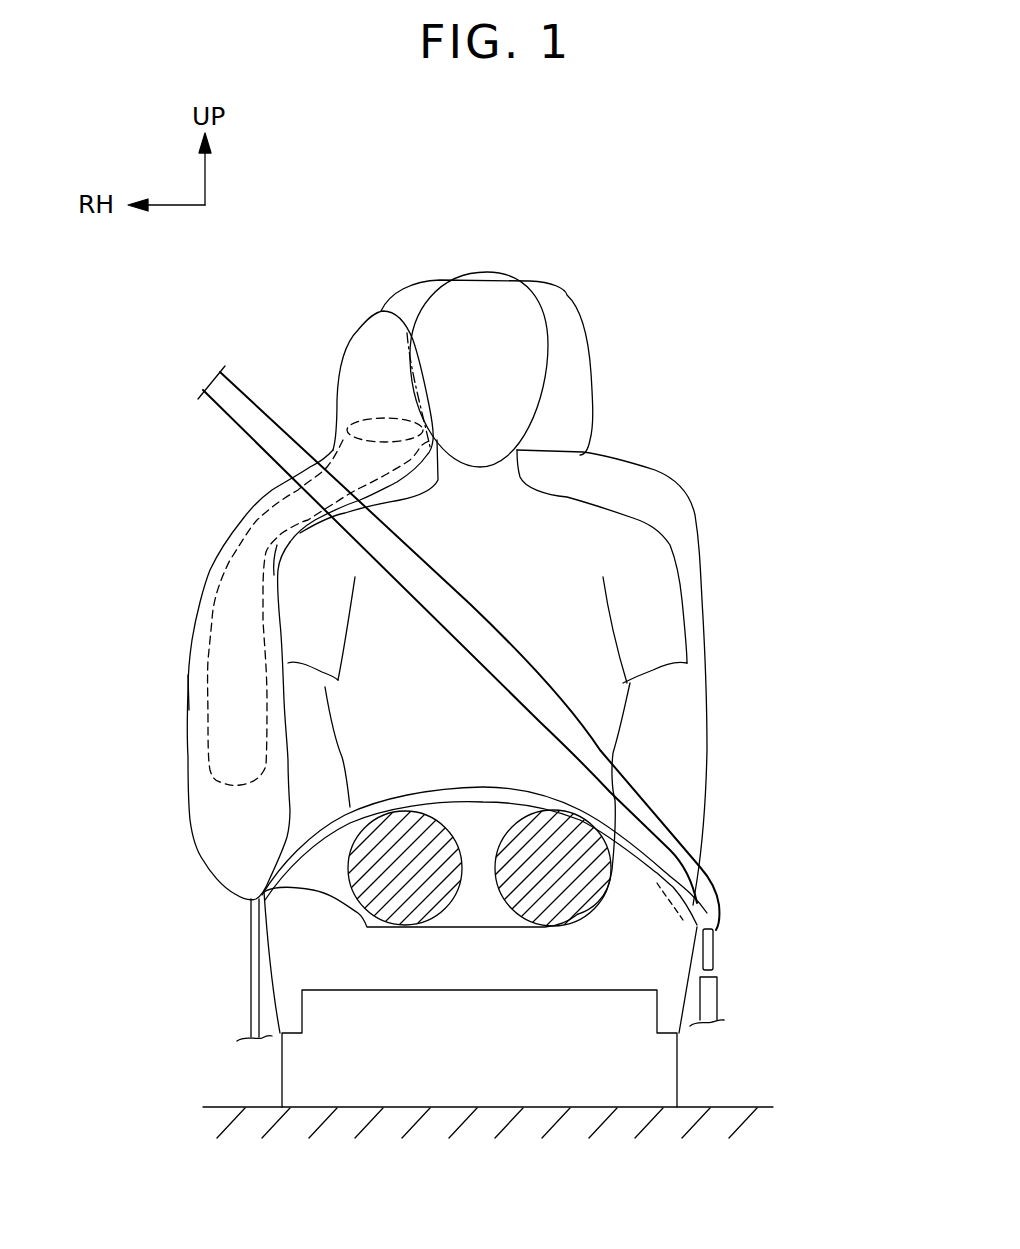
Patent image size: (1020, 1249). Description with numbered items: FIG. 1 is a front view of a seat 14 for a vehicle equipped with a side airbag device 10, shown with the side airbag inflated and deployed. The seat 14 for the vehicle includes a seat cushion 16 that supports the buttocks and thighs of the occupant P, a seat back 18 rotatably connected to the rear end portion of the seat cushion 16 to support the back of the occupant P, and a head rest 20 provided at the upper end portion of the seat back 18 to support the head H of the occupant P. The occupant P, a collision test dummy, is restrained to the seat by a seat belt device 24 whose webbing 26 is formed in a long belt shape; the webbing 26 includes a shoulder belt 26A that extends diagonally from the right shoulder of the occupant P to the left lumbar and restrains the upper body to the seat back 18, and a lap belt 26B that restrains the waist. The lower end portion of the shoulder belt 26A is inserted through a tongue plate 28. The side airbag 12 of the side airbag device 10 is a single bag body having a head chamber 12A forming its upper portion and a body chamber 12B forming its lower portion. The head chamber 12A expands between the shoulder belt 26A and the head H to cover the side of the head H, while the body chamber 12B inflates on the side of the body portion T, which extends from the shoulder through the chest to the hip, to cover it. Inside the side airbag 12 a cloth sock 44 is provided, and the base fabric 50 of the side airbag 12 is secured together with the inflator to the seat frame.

The side airbag device 10 is at (192, 525).
The side airbag 12 is at (342, 331).
The head chamber 12A is at (337, 400).
The body chamber 12B is at (190, 805).
The seat for a vehicle 14 is at (252, 1009).
The seat cushion 16 is at (283, 927).
The seat back 18 is at (683, 485).
The head rest 20 is at (595, 356).
The seat belt device 24 is at (742, 906).
The webbing 26 is at (467, 595).
The shoulder belt 26A is at (526, 660).
The lap belt 26B is at (445, 790).
The tongue plate 28 is at (720, 952).
The sock 44 is at (200, 655).
The base fabric 50 is at (200, 688).
The occupant P is at (494, 262).
The head H is at (546, 318).
The body portion T is at (680, 558).